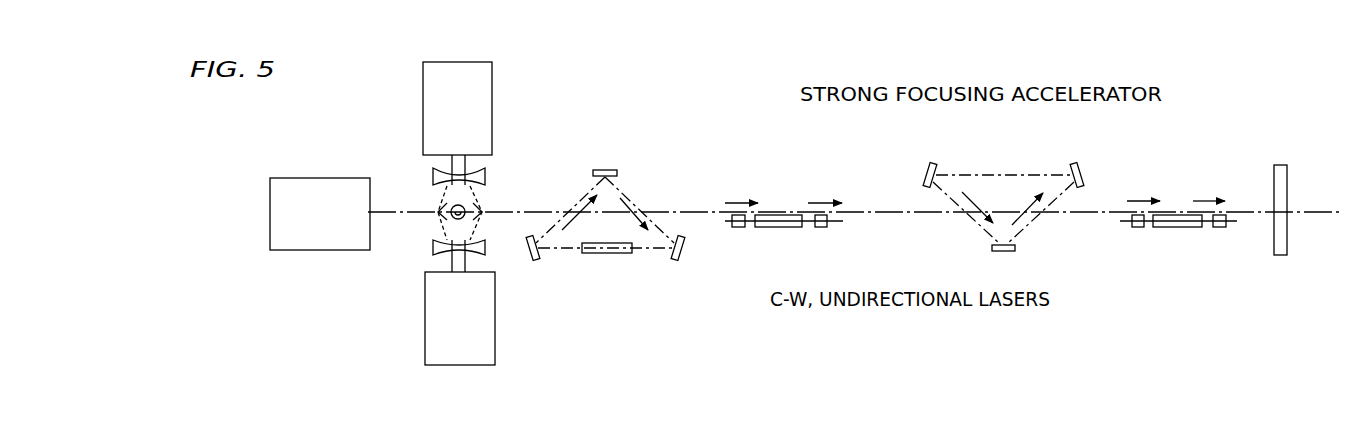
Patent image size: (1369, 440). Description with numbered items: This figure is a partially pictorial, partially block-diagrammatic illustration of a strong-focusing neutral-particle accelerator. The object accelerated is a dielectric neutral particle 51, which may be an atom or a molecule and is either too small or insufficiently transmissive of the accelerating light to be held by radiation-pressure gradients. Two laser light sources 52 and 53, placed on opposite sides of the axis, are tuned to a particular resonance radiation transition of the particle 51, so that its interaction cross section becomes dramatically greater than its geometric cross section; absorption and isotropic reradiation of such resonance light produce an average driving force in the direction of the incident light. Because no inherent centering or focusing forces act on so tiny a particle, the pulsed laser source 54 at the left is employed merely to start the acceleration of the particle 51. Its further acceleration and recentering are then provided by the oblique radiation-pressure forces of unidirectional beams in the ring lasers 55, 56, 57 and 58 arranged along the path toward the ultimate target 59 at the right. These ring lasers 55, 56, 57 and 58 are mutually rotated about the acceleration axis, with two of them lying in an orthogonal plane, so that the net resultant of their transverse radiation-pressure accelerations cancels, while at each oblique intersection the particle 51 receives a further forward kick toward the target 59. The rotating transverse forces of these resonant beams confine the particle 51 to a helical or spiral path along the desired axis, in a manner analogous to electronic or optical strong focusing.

The dielectric neutral particle 51 is at (450, 204).
The laser light source 52 is at (492, 97).
The laser light source 53 is at (495, 330).
The pulsed laser source 54 is at (270, 217).
The ring laser 55 is at (616, 157).
The ring laser 56 is at (790, 256).
The ring laser 57 is at (988, 156).
The ring laser 58 is at (1169, 256).
The target 59 is at (1287, 238).